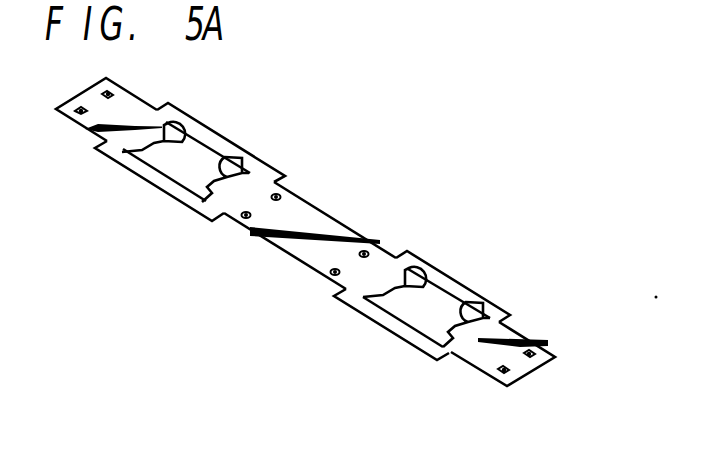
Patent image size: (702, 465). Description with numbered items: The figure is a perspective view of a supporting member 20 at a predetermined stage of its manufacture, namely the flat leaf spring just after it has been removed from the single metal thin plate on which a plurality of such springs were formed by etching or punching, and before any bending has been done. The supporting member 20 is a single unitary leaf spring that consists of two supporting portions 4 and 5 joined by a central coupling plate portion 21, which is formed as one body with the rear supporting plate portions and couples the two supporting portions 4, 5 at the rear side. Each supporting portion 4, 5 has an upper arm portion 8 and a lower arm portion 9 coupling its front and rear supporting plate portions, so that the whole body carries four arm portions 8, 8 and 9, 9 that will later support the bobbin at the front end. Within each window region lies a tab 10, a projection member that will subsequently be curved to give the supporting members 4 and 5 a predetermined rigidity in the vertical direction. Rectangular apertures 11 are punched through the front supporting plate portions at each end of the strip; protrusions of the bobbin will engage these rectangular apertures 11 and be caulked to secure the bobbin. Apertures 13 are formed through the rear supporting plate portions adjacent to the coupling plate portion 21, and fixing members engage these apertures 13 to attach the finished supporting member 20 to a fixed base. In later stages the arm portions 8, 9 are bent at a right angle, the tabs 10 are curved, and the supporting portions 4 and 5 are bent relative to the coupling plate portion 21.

The supporting member 4 is at (118, 168).
The supporting member 5 is at (415, 364).
The upper arm portion 8 is at (169, 192).
The lower arm portion 9 is at (222, 130).
The tab 10 is at (182, 124).
The rectangular aperture 11 is at (75, 108).
The aperture 13 is at (282, 194).
The supporting member 20 is at (261, 294).
The coupling plate portion 21 is at (330, 218).